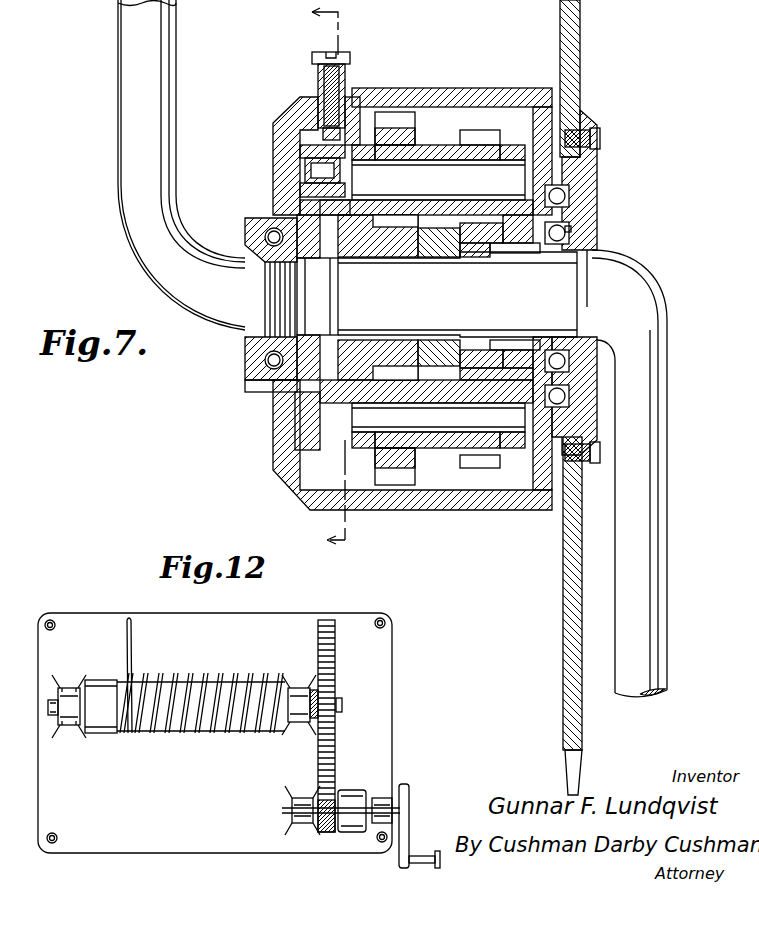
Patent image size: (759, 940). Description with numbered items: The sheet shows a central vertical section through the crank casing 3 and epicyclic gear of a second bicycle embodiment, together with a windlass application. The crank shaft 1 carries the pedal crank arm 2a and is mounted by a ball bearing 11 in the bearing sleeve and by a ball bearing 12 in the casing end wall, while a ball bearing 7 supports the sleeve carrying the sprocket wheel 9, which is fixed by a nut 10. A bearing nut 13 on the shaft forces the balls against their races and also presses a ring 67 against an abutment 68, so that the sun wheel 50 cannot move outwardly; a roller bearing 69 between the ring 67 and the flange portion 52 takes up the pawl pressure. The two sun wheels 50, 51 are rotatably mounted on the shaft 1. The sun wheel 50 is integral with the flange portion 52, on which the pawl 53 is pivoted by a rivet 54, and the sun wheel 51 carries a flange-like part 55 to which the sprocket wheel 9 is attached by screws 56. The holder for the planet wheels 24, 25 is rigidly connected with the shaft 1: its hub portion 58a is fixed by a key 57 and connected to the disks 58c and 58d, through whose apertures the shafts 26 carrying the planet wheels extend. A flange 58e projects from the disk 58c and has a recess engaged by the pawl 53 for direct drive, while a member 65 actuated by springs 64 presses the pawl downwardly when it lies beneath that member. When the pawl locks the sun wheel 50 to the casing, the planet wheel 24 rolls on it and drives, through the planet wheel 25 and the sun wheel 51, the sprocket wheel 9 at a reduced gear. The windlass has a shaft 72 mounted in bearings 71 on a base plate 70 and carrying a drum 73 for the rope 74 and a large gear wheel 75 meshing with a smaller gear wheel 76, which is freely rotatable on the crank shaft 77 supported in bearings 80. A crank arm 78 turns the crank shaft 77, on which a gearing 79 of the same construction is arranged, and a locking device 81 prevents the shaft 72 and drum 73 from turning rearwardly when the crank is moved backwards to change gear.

In FIG. 7, the crank shaft 1 is at (560, 270).
In FIG. 7, the pedal crank arm 2a is at (655, 497).
In FIG. 7, the crank casing 3 is at (426, 92).
In FIG. 7, the ball bearing 7 is at (586, 197).
In FIG. 7, the sprocket wheel 9 is at (578, 10).
In FIG. 7, the nut 10 is at (316, 275).
In FIG. 7, the ball bearing 11 is at (572, 230).
In FIG. 7, the ball bearing 12 is at (305, 352).
In FIG. 7, the bearing nut 13 is at (337, 298).
In FIG. 7, the planet wheel 24 is at (388, 118).
In FIG. 7, the planet wheel 25 is at (472, 138).
In FIG. 7, the shaft 26 is at (395, 170).
In FIG. 7, the sun wheel 50 is at (352, 252).
In FIG. 7, the sun wheel 51 is at (476, 256).
In FIG. 7, the flange portion 52 is at (317, 189).
In FIG. 7, the pawl 53 is at (333, 153).
In FIG. 7, the rivet 54 is at (313, 165).
In FIG. 7, the flange-like part 55 is at (595, 166).
In FIG. 7, the screw 56 is at (592, 132).
In FIG. 7, the key 57 is at (436, 250).
In FIG. 7, the hub portion 58a is at (432, 253).
In FIG. 7, the disk 58c is at (362, 152).
In FIG. 7, the disk 58d is at (512, 150).
In FIG. 7, the flange 58e is at (310, 203).
In FIG. 7, the spring 64 is at (320, 84).
In FIG. 7, the member 65 is at (312, 130).
In FIG. 7, the ring 67 is at (272, 387).
In FIG. 7, the abutment 68 is at (268, 318).
In FIG. 7, the roller bearing 69 is at (290, 395).
In FIG. 12, the base plate 70 is at (42, 758).
In FIG. 12, the bearing 71 is at (70, 690).
In FIG. 12, the shaft 72 is at (48, 708).
In FIG. 12, the drum 73 is at (192, 680).
In FIG. 12, the rope or wire 74 is at (133, 640).
In FIG. 12, the large gear wheel 75 is at (336, 676).
In FIG. 12, the gear wheel 76 is at (328, 832).
In FIG. 12, the crank shaft 77 is at (288, 810).
In FIG. 12, the crank arm 78 is at (422, 856).
In FIG. 12, the gearing 79 is at (350, 790).
In FIG. 12, the bearing 80 is at (300, 798).
In FIG. 12, the locking device 81 is at (314, 690).